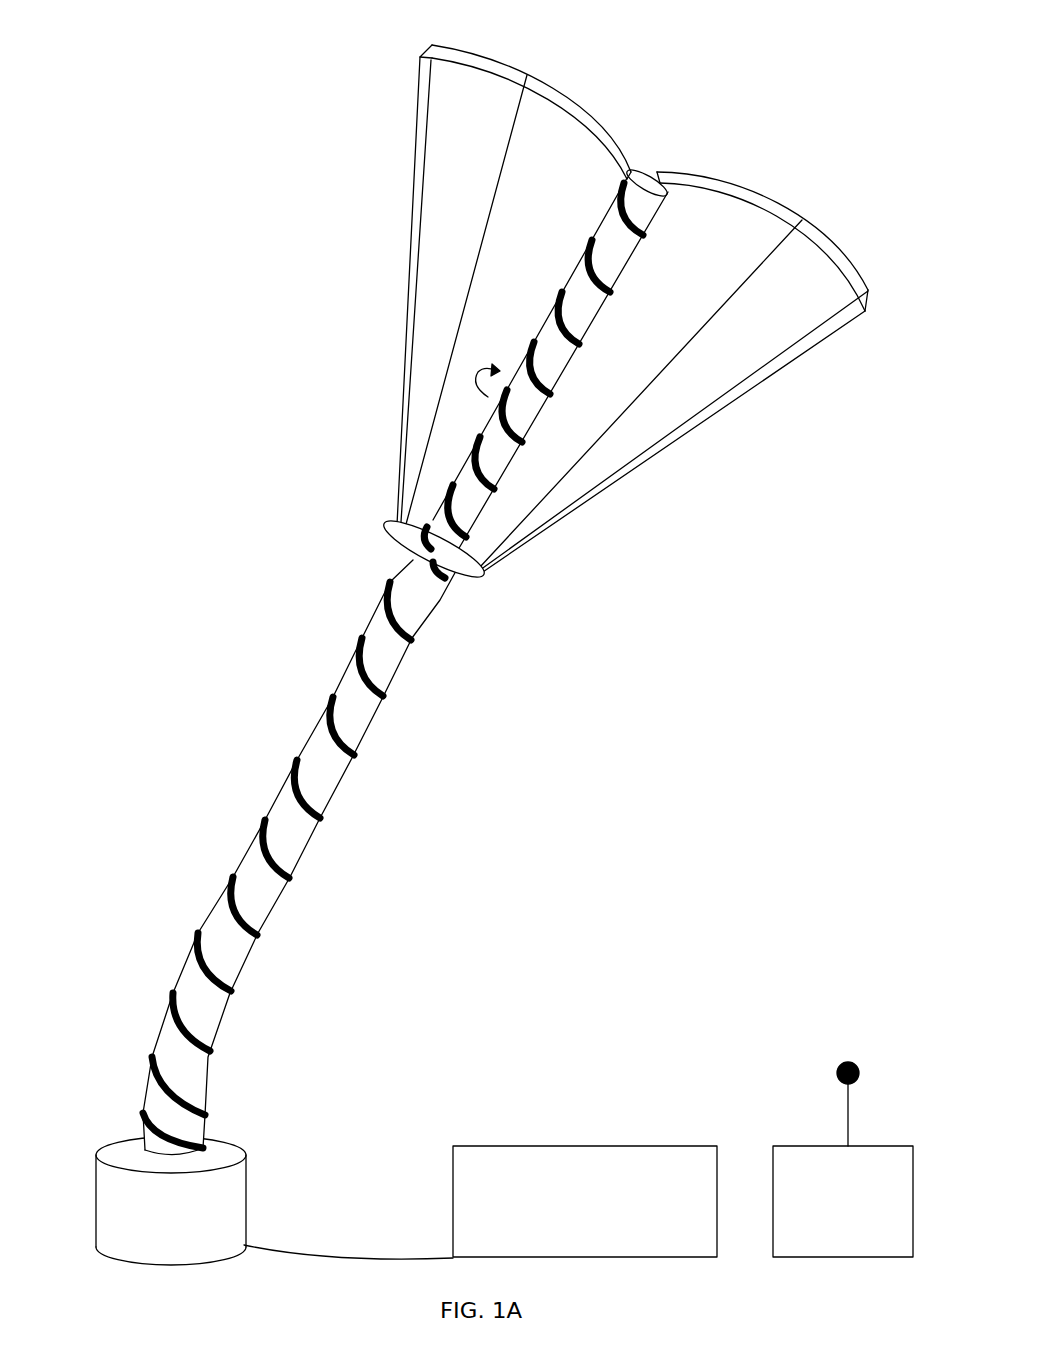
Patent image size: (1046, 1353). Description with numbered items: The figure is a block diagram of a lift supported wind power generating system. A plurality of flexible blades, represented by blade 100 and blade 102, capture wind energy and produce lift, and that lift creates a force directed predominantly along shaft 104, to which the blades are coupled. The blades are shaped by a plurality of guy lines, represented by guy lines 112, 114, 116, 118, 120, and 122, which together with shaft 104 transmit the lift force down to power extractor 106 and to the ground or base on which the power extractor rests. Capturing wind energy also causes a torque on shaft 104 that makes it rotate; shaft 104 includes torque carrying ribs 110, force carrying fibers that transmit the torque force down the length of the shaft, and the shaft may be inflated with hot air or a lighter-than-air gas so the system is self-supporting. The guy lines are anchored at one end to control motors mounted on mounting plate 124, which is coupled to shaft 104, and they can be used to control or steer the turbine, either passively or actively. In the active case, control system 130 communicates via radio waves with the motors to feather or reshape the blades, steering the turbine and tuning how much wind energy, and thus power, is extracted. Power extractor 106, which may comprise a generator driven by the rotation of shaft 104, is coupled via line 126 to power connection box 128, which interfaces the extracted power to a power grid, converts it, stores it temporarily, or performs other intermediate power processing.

The blade 100 is at (487, 264).
The blade 102 is at (672, 366).
The shaft 104 is at (541, 326).
The power extractor 106 is at (97, 1176).
The torque carrying ribs 110 is at (612, 285).
The guy line 112 is at (740, 395).
The guy line 114 is at (686, 415).
The guy line 116 is at (712, 316).
The guy line 118 is at (510, 151).
The guy line 120 is at (430, 92).
The guy line 122 is at (412, 200).
The mounting plate 124 is at (481, 573).
The line 126 is at (308, 1252).
The power connection box 128 is at (496, 1164).
The control system 130 is at (800, 1165).